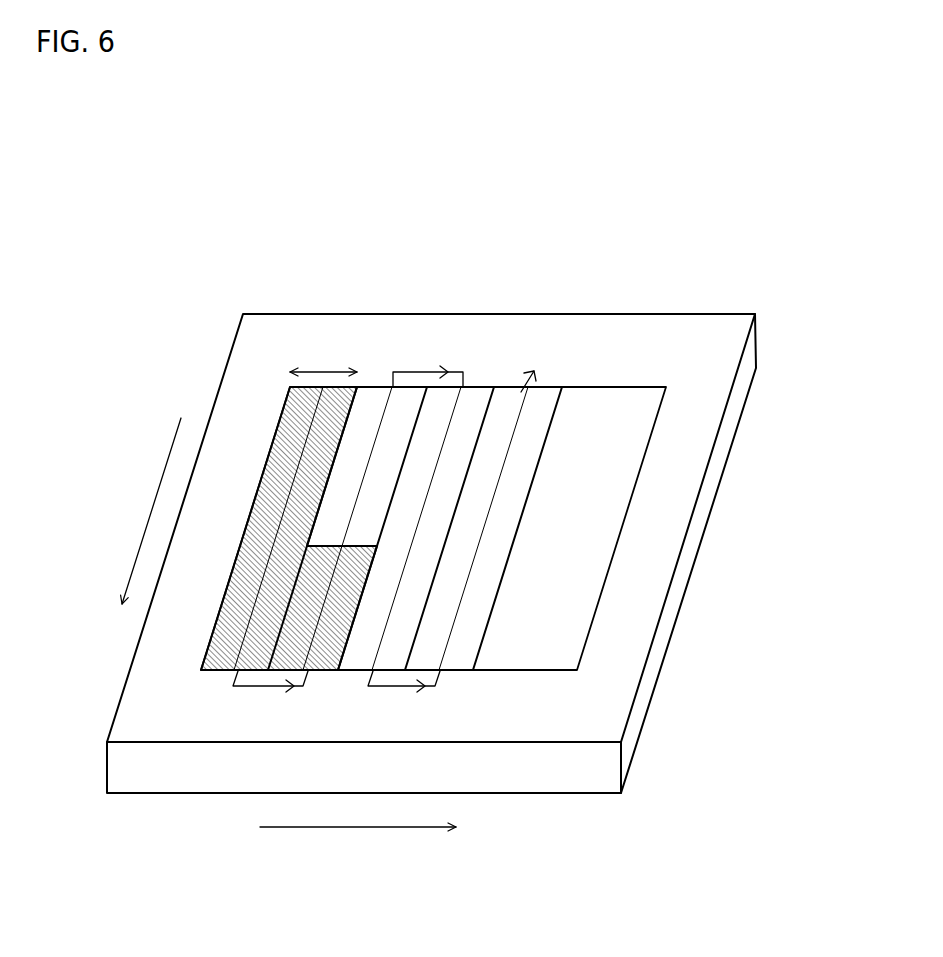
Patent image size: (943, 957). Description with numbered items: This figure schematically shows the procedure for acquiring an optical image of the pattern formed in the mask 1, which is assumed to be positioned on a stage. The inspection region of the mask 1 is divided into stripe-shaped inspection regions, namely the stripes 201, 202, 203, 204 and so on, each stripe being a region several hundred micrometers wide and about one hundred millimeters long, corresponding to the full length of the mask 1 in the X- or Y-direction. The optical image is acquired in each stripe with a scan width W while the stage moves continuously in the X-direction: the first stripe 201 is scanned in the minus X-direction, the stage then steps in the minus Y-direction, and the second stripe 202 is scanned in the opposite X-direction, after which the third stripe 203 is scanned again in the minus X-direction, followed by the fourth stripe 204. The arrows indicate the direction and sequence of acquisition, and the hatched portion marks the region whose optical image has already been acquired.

The mask 1 is at (719, 578).
The first stripe 201 is at (286, 428).
The second stripe 202 is at (365, 397).
The third stripe 203 is at (468, 397).
The fourth stripe 204 is at (540, 395).